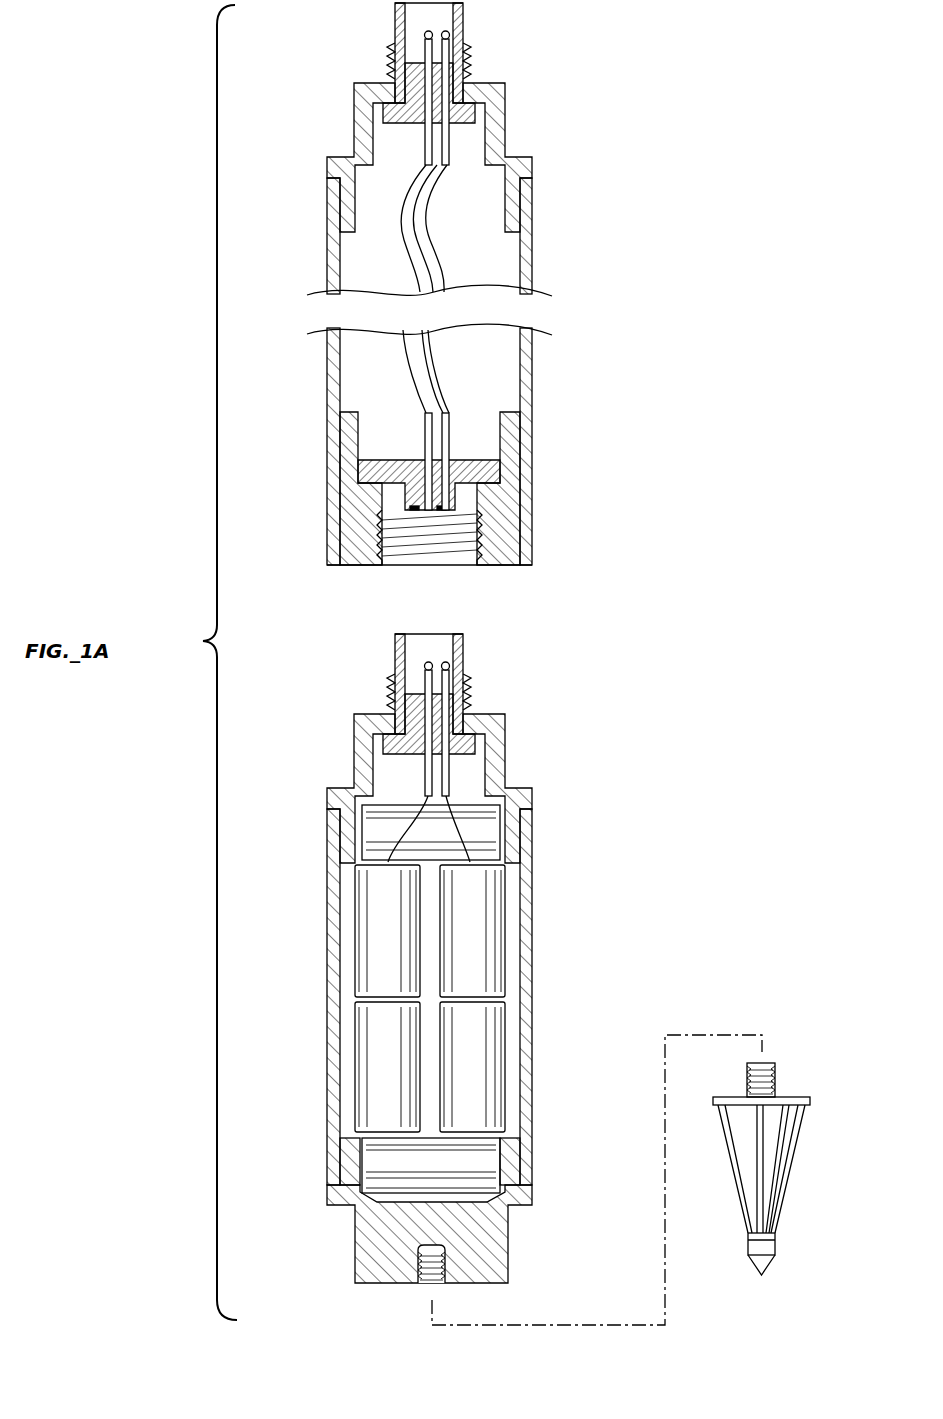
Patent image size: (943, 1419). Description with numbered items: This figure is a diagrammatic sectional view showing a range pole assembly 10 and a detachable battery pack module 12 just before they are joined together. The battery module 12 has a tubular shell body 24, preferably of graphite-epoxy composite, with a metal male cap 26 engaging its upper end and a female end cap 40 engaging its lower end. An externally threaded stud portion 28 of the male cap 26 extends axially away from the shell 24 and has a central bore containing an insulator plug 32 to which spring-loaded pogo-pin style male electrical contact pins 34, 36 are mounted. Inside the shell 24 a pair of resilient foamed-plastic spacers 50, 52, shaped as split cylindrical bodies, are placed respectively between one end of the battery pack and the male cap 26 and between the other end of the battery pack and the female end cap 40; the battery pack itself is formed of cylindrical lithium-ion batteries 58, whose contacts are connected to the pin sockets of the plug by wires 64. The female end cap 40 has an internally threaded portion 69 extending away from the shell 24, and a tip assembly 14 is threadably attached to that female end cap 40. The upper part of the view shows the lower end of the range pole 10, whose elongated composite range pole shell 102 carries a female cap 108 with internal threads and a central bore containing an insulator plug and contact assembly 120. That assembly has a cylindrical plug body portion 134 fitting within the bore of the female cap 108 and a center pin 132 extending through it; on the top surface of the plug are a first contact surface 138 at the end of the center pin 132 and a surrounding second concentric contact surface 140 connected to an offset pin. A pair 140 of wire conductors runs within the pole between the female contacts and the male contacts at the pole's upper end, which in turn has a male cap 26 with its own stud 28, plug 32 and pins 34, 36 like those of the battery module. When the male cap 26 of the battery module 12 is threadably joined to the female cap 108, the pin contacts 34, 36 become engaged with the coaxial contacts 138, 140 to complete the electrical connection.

The range pole assembly 10 is at (292, 243).
The battery pack module 12 is at (556, 1112).
The tip assembly 14 is at (790, 1140).
The tubular shell body 24 is at (332, 980).
The male cap 26 is at (494, 124).
The externally threaded stud portion 28 is at (470, 75).
The insulator plug 32 is at (409, 77).
The male electrical contact pin 34 is at (419, 47).
The male electrical contact pin 36 is at (452, 50).
The female end cap 40 is at (508, 1268).
The resilient spacer 50 is at (495, 852).
The resilient spacer 52 is at (492, 1168).
The cylindrical batteries 58 is at (490, 1043).
The wires 64 is at (407, 815).
The internally threaded portion 69 is at (417, 1265).
The range pole shell 102 is at (535, 242).
The female cap 108 is at (495, 497).
The insulator plug and contact assembly 120 is at (482, 458).
The center pin 132 is at (423, 428).
The cylindrical plug body portion 134 is at (445, 420).
The first contact surface 138 is at (432, 513).
The second concentric contact surface 140 is at (400, 378).